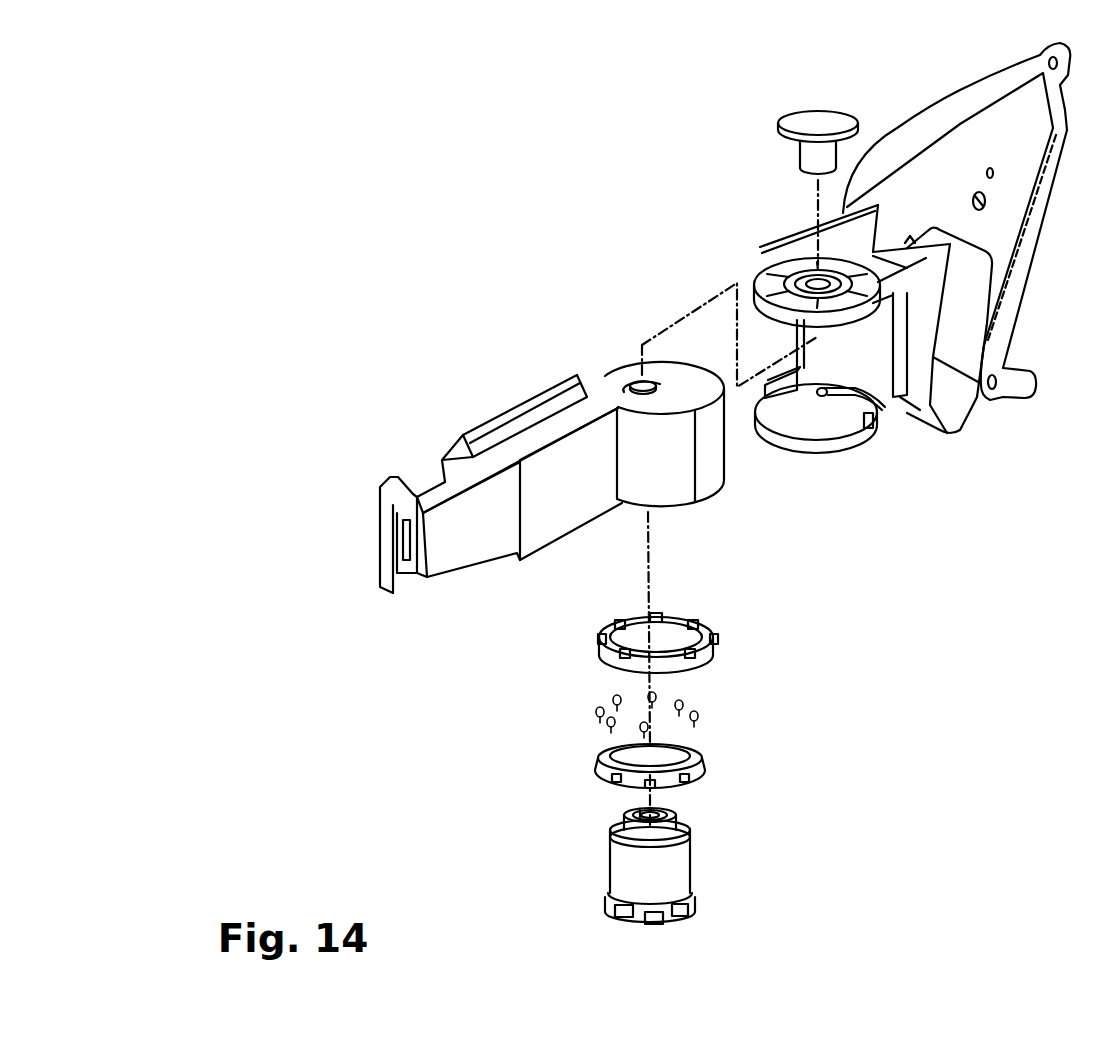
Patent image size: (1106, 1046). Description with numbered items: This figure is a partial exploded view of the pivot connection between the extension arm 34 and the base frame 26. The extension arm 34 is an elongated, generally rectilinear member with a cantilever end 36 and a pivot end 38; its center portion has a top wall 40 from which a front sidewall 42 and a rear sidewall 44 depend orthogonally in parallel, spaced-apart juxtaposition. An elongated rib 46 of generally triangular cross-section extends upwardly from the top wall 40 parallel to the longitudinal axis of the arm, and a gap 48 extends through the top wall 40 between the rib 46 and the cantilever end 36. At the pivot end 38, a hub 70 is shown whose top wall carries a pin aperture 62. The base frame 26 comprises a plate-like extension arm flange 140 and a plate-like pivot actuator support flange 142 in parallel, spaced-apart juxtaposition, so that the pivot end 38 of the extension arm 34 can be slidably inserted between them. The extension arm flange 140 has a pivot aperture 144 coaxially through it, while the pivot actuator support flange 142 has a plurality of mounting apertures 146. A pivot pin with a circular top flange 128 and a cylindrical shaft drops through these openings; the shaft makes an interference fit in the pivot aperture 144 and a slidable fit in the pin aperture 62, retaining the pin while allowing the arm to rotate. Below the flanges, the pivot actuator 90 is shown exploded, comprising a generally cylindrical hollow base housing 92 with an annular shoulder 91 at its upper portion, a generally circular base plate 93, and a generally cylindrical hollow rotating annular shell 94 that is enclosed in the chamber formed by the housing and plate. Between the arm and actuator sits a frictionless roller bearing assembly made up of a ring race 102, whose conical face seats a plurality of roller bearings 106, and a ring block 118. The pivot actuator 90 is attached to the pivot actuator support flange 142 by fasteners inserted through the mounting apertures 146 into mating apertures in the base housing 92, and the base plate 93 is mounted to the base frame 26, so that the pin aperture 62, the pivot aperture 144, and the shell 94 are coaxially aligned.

The base frame 26 is at (931, 170).
The circular top flange 128 is at (810, 120).
The extension arm flange 140 is at (799, 253).
The pivot aperture 144 is at (816, 278).
The pivot actuator support flange 142 is at (860, 417).
The mounting apertures 146 is at (825, 400).
The extension arm 34 is at (729, 555).
The cantilever end 36 is at (531, 454).
The hub 70 is at (678, 387).
The pivot end 38 is at (635, 368).
The pin aperture 62 is at (627, 385).
The front sidewall 42 is at (575, 505).
The top wall 40 is at (527, 447).
The elongated rib 46 is at (517, 420).
The rear sidewall 44 is at (447, 462).
The gap 48 is at (428, 480).
The ring block 118 is at (715, 646).
The roller bearings 106 is at (700, 713).
The ring race 102 is at (697, 764).
The pivot actuator 90 is at (639, 865).
The base housing 92 is at (672, 858).
The annular shoulder 91 is at (615, 831).
The rotating annular shell 94 is at (680, 818).
The base plate 93 is at (690, 922).